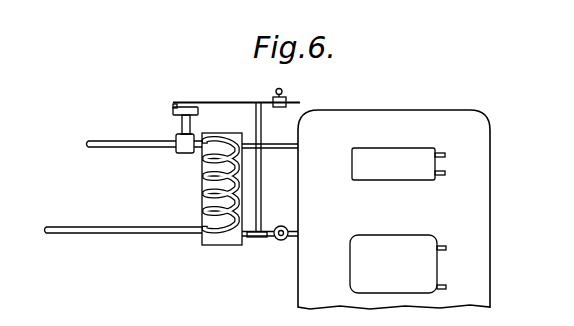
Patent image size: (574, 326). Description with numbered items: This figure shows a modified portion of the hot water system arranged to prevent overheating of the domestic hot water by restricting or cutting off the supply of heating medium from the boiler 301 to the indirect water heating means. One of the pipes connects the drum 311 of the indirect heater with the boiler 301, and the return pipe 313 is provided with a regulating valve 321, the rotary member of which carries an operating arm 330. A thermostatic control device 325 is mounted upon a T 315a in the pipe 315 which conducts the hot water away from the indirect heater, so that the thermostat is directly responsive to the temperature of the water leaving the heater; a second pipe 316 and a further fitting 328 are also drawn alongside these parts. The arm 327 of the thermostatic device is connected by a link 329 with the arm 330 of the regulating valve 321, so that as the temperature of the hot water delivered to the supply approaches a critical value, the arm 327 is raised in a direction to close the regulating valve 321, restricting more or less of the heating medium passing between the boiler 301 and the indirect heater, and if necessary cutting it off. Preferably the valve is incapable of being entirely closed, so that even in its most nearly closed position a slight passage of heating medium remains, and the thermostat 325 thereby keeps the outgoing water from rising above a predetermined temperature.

The boiler 301 is at (478, 139).
The drum 311 is at (202, 189).
The return pipe 313 is at (295, 241).
The pipe 315 is at (105, 148).
The T 315a is at (181, 152).
The outlet pipe 316 is at (107, 234).
The regulating valve 321 is at (279, 241).
The thermostatic control device 325 is at (173, 111).
The arm 327 is at (228, 96).
The valve 328 is at (286, 99).
The link 329 is at (261, 188).
The operating arm 330 is at (265, 237).